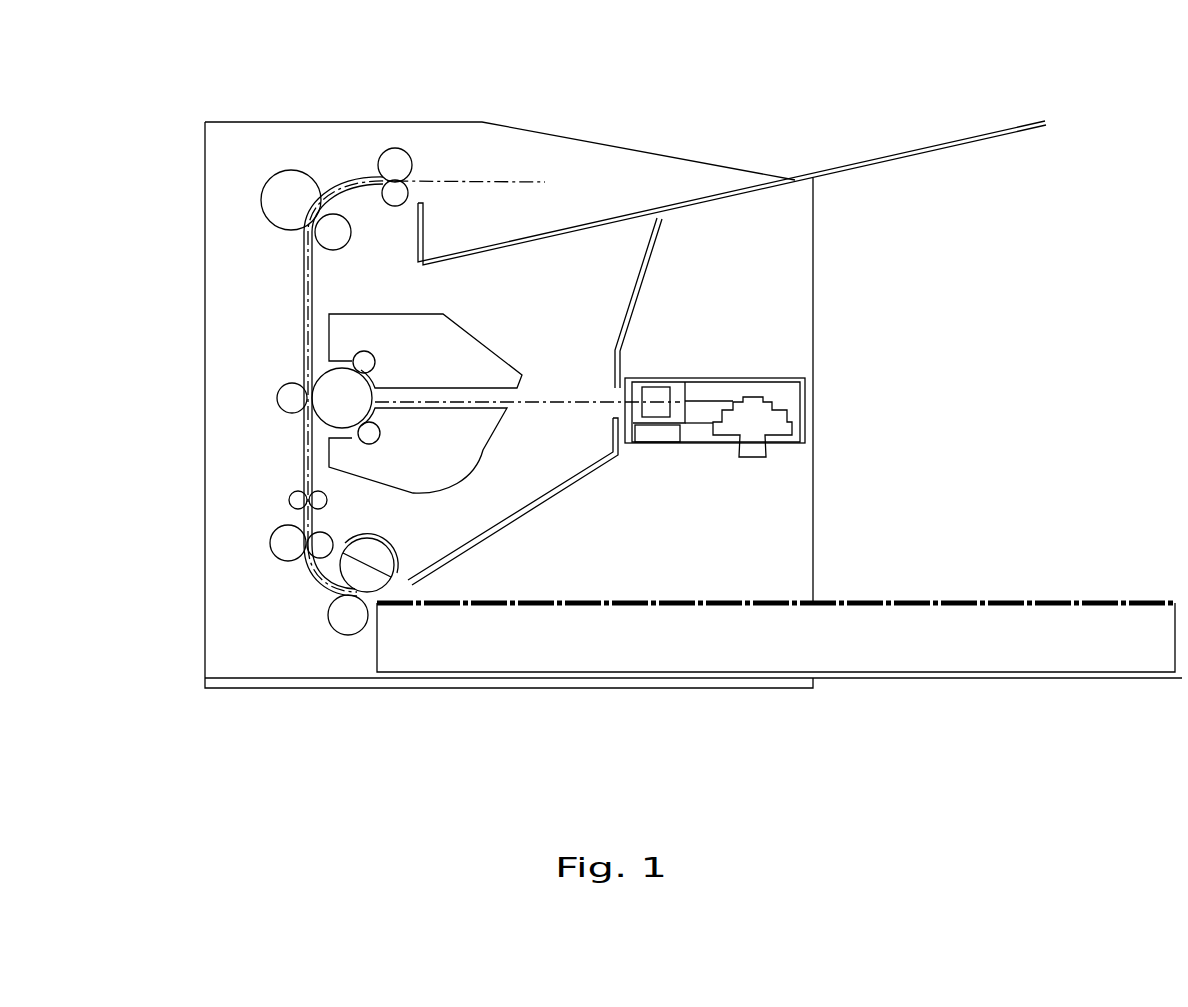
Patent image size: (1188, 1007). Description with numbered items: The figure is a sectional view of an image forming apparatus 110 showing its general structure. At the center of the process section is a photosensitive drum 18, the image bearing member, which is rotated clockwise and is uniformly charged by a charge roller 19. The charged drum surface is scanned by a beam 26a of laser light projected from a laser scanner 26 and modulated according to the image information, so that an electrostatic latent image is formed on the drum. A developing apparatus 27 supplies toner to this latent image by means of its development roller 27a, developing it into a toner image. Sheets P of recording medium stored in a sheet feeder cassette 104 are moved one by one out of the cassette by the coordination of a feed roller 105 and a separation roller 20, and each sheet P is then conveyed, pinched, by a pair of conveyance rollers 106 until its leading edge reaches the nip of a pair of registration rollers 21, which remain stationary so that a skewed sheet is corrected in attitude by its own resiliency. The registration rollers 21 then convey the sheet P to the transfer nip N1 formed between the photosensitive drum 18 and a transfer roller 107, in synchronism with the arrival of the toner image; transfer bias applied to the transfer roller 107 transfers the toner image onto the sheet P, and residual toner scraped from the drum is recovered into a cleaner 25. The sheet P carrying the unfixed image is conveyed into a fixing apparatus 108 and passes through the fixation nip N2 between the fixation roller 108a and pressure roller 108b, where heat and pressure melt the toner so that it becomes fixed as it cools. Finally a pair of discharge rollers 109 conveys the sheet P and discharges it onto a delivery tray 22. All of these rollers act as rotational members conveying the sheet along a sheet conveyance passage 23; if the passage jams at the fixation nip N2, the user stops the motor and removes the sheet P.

The image forming apparatus 110 is at (245, 114).
The delivery tray 22 is at (672, 204).
The fixing apparatus 108 is at (320, 154).
The fixation roller 108a is at (343, 227).
The pressure roller 108b is at (290, 181).
The discharge rollers 109 is at (395, 158).
The sheet conveyance passage 23 is at (303, 290).
The fixation nip N2 is at (306, 243).
The transfer nip N1 is at (307, 410).
The photosensitive drum 18 is at (330, 386).
The charge roller 19 is at (364, 351).
The transfer roller 107 is at (284, 397).
The cleaner 25 is at (492, 347).
The developing apparatus 27 is at (483, 460).
The development roller 27a is at (370, 445).
The laser scanner 26 is at (727, 378).
The beam of laser light 26a is at (568, 400).
The registration rollers 21 is at (300, 493).
The conveyance rollers 106 is at (287, 553).
The feed roller 105 is at (373, 550).
The separation roller 20 is at (348, 627).
The sheet feeder cassette 104 is at (865, 679).
The sheet of recording medium P is at (967, 602).